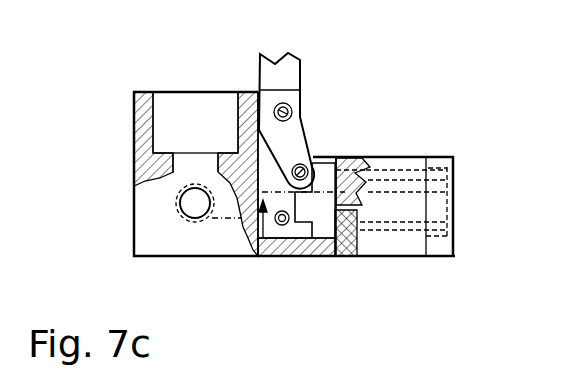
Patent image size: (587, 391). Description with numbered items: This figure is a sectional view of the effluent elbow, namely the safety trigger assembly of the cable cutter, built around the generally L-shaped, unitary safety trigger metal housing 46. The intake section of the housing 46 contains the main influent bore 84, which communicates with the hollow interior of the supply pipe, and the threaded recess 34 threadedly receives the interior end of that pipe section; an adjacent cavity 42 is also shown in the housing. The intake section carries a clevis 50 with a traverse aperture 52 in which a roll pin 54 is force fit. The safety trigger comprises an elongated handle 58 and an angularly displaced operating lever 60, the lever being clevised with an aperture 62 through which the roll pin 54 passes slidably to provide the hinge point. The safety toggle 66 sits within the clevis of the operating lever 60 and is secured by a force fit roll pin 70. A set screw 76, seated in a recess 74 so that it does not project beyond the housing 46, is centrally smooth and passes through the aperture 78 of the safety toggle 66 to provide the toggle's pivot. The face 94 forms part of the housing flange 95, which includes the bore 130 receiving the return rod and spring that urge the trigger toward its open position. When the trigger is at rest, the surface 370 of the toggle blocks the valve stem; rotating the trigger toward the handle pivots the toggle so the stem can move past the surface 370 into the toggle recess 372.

The threaded recess 34 is at (176, 165).
The cavity 42 is at (180, 150).
The safety trigger metal housing 46 is at (134, 238).
The clevis 50 is at (305, 70).
The traverse aperture 52 is at (305, 105).
The roll pin 54 is at (312, 120).
The elongated handle 58 is at (273, 60).
The operating lever 60 is at (308, 158).
The aperture 62 is at (310, 170).
The safety toggle 66 is at (262, 237).
The roll pin 70 is at (380, 158).
The recess 74 is at (330, 225).
The set screw 76 is at (290, 240).
The aperture 78 is at (280, 225).
The main influent bore 84 is at (190, 216).
The face 94 is at (455, 165).
The housing flange 95 is at (432, 257).
The bore 130 is at (405, 158).
The surface 370 is at (335, 245).
The toggle recess 372 is at (317, 203).